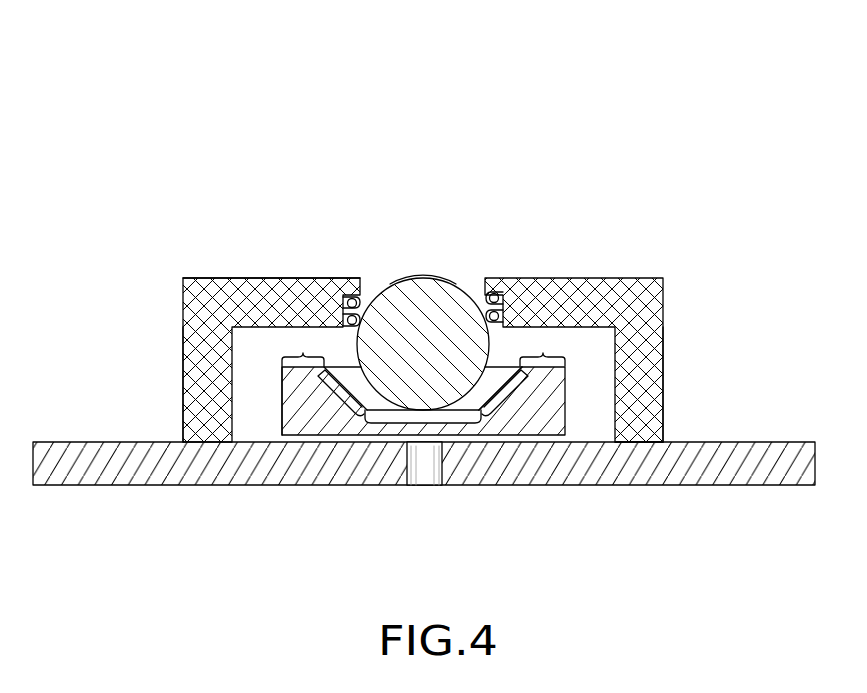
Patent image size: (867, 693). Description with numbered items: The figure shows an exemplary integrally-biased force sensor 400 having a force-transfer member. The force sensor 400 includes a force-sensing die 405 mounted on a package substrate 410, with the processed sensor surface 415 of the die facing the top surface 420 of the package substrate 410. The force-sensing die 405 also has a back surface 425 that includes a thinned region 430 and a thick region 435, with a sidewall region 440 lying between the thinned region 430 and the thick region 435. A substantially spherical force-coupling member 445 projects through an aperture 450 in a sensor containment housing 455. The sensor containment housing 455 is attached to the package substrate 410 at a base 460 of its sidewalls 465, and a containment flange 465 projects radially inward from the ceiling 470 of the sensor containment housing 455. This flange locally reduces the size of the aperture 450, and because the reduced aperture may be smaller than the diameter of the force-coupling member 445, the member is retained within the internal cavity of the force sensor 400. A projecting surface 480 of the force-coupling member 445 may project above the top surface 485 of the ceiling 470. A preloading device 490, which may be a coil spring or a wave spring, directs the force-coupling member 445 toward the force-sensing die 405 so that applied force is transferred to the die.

The force sensor 400 is at (110, 112).
The force-sensing die 405 is at (271, 380).
The package substrate 410 is at (701, 442).
The processed sensor surface 415 is at (336, 408).
The top surface 420 is at (470, 437).
The back surface 425 is at (500, 357).
The thinned region 430 is at (422, 423).
The thick region 435 is at (303, 352).
The sidewall region 440 is at (333, 398).
The force-coupling member 445 is at (447, 358).
The aperture 450 is at (428, 242).
The sensor containment housing 455 is at (251, 316).
The base 460 is at (650, 442).
The sidewalls 465 is at (356, 278).
The ceiling 470 is at (205, 262).
The projecting surface 480 is at (437, 284).
The top surface 485 is at (233, 278).
The preloading device 490 is at (497, 312).